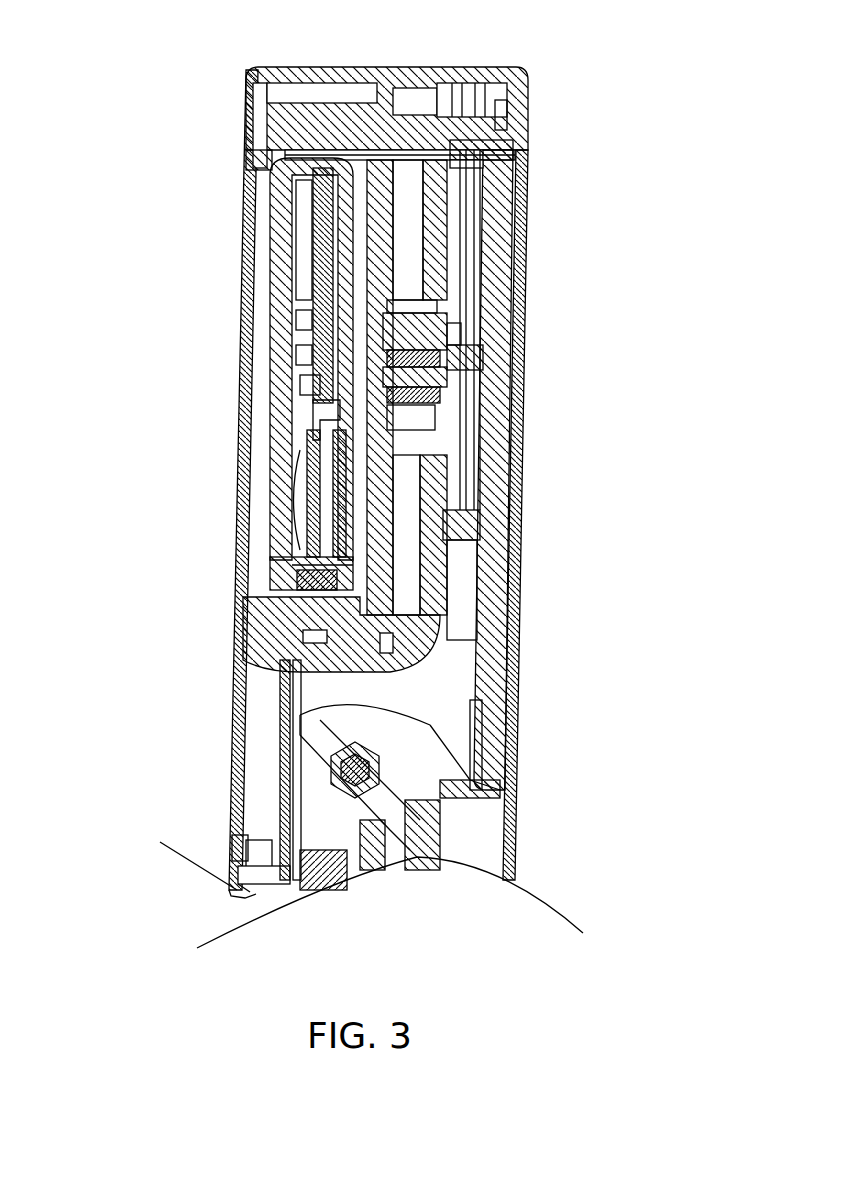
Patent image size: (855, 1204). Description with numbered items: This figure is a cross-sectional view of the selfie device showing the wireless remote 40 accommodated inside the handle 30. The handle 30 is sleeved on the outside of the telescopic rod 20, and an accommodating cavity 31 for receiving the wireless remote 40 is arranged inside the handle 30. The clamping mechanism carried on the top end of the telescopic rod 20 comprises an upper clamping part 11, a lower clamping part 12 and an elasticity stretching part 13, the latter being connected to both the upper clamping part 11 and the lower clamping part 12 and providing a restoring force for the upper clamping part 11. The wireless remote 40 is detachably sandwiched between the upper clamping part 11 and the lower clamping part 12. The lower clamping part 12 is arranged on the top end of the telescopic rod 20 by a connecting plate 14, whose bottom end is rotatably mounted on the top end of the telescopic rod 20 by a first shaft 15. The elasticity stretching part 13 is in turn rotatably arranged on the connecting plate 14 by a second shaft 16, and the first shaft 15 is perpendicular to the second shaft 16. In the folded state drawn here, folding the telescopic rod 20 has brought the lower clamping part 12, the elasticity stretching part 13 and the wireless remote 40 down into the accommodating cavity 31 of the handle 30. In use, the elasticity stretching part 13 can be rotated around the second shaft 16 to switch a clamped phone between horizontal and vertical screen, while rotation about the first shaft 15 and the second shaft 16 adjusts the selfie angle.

The upper clamping part 11 is at (243, 85).
The lower clamping part 12 is at (241, 658).
The elasticity stretching part 13 is at (440, 280).
The connecting plate 14 is at (495, 620).
The first shaft 15 is at (372, 772).
The second shaft 16 is at (445, 368).
The telescopic rod 20 is at (335, 918).
The handle 30 is at (285, 484).
The accommodating cavity 31 is at (197, 374).
The wireless remote 40 is at (197, 384).